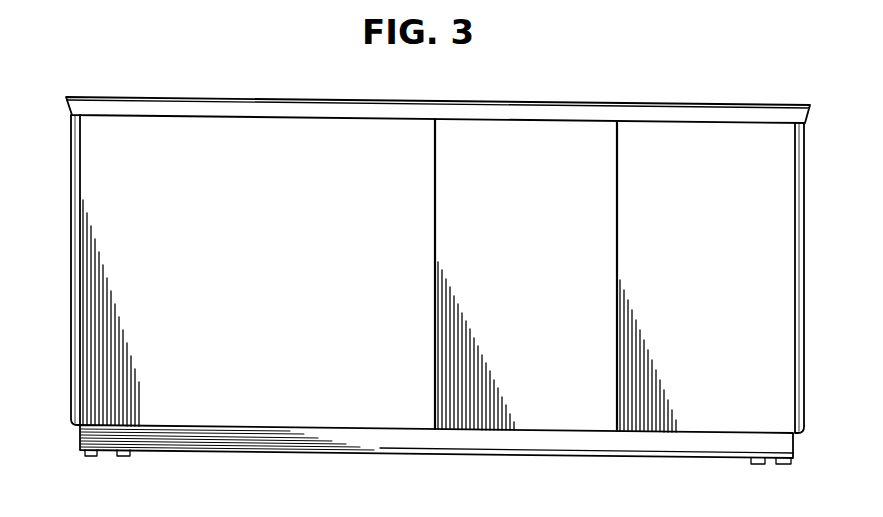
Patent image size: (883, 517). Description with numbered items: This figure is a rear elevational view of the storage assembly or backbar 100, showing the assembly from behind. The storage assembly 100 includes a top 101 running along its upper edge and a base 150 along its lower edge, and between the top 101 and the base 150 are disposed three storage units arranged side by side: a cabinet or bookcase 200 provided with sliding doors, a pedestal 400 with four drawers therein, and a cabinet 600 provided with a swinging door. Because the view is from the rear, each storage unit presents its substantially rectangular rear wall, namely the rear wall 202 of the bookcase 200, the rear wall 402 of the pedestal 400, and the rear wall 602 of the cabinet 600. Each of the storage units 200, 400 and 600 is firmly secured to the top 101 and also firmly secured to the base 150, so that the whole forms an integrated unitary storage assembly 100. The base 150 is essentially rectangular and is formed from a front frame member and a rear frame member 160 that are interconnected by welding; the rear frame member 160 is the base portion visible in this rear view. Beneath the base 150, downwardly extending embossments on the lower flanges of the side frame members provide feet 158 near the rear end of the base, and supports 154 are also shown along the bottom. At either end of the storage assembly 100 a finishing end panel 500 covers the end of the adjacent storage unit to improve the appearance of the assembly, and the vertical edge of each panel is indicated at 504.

The storage assembly 100 is at (423, 259).
The top 101 is at (133, 78).
The base 150 is at (330, 441).
The foot 154 is at (126, 456).
The foot 158 is at (85, 453).
The rear frame member 160 is at (455, 445).
The cabinet or bookcase 200 is at (216, 387).
The rear wall 202 is at (265, 257).
The pedestal 400 is at (479, 165).
The rear wall 402 is at (546, 265).
The finishing end panel 500 is at (72, 251).
The side post inner flange 504 is at (72, 326).
The cabinet 600 is at (666, 162).
The rear wall 602 is at (726, 267).